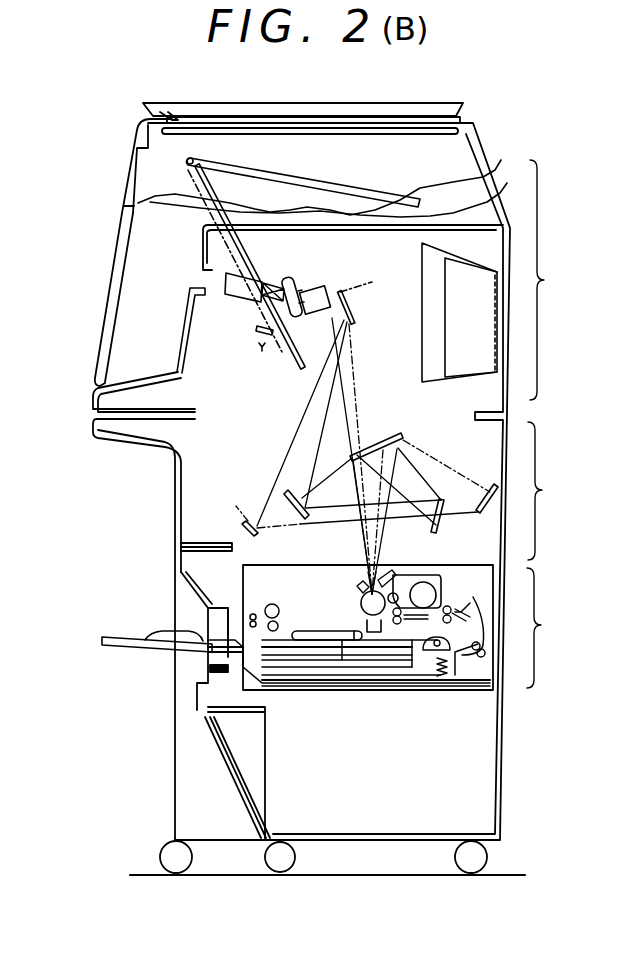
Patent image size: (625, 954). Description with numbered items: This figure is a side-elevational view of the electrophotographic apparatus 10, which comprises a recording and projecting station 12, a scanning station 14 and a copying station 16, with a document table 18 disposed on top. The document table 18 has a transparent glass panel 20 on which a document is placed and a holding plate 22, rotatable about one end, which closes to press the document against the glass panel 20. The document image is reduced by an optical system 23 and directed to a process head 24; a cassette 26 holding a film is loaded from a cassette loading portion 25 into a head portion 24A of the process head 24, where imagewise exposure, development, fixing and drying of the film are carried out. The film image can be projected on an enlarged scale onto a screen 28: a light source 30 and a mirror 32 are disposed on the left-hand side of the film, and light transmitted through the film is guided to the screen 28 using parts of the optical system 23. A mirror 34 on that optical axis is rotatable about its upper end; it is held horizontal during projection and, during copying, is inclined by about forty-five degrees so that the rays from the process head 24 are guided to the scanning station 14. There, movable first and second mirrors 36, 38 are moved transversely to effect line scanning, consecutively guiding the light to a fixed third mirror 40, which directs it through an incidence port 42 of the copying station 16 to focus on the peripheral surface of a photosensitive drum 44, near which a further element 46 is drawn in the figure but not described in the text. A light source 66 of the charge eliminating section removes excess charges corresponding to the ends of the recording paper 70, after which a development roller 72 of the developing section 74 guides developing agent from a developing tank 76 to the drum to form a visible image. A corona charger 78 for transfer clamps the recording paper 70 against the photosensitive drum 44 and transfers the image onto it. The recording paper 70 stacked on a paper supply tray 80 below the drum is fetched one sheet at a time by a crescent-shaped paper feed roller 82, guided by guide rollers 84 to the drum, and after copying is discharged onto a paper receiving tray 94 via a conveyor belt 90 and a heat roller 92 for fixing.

The electrophotographic apparatus 10 is at (88, 230).
The recording and projecting station 12 is at (550, 280).
The scanning station 14 is at (549, 491).
The copying station 16 is at (548, 628).
The document table 18 is at (484, 120).
The transparent glass panel 20 is at (407, 117).
The holding plate 22 is at (350, 103).
The optical system 23 is at (490, 178).
The process head 24 is at (305, 279).
The head portion 24A is at (287, 277).
The cassette loading portion 25 is at (192, 289).
The cassette 26 is at (236, 299).
The screen 28 is at (112, 255).
The light source 30 is at (263, 348).
The mirror 32 is at (268, 284).
The mirror 34 is at (359, 317).
The first mirror 36 is at (290, 492).
The second mirror 38 is at (440, 493).
The third mirror 40 is at (399, 448).
The incidence port 42 is at (369, 573).
The photosensitive drum 44 is at (361, 606).
The charger 46 is at (357, 587).
The light source 66 is at (388, 575).
The recording paper 70 is at (296, 688).
The development roller 72 is at (410, 575).
The developing section 74 is at (442, 517).
The developing tank 76 is at (443, 575).
The corona charger for transfer 78 is at (388, 690).
The paper supply tray 80 is at (248, 635).
The paper feed roller 82 is at (443, 678).
The guide rollers 84 is at (452, 612).
The conveyor belt 90 is at (350, 690).
The heat roller 92 is at (270, 604).
The paper receiving tray 94 is at (118, 640).